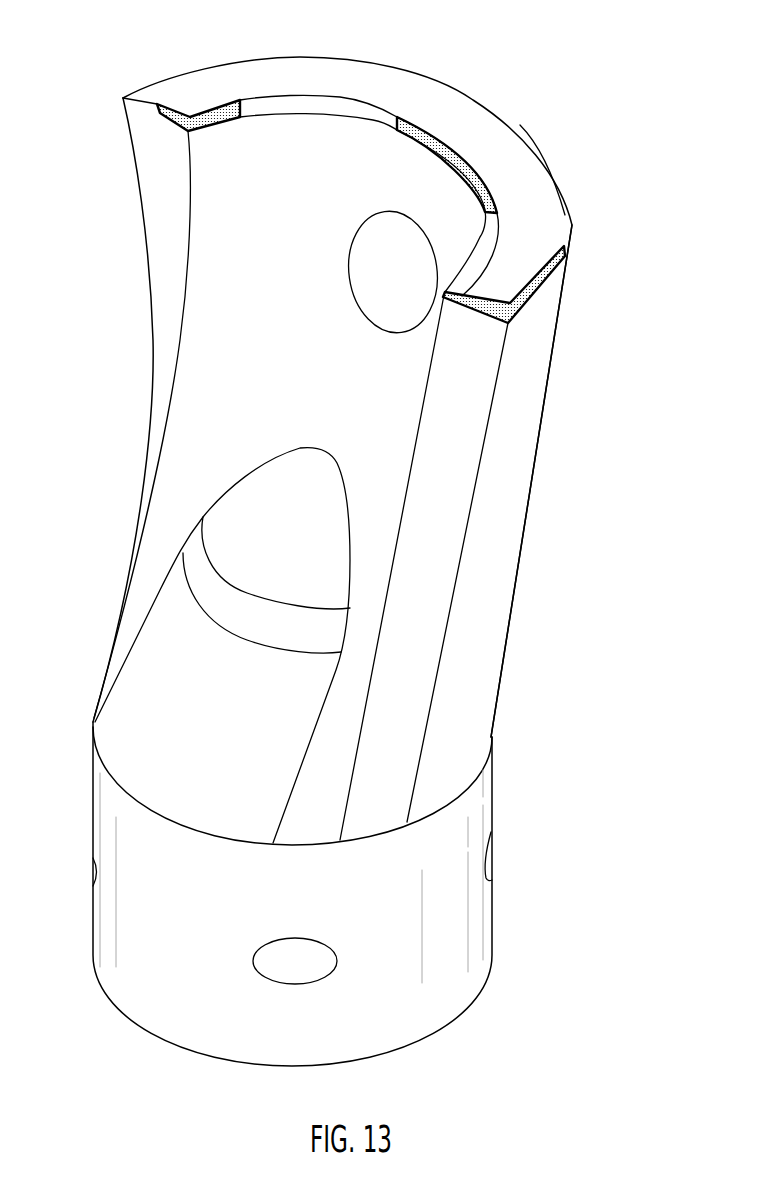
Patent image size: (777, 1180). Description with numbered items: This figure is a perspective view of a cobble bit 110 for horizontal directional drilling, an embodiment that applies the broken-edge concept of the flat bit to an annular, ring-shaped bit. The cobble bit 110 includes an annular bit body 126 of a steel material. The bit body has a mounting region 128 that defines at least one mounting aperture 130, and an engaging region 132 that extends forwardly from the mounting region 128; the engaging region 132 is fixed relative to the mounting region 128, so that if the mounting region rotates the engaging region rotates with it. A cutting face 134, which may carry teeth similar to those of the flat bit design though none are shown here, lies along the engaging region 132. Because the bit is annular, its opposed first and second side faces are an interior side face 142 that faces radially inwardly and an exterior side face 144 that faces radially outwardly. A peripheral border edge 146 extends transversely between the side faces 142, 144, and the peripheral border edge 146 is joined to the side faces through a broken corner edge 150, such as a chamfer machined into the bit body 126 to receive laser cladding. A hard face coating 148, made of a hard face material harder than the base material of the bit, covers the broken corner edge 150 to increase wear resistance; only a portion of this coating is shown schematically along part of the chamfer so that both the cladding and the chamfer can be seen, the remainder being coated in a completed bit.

The cobble bit 110 is at (598, 440).
The annular bit body 126 is at (493, 560).
The mounting region 128 is at (473, 827).
The mounting aperture 130 is at (319, 962).
The engaging region 132 is at (532, 373).
The cutting face 134 is at (473, 113).
The interior side face 142 is at (230, 357).
The exterior side face 144 is at (510, 495).
The peripheral border edge 146 is at (282, 77).
The hard face coating 148 is at (200, 112).
The broken corner edge 150 is at (332, 103).